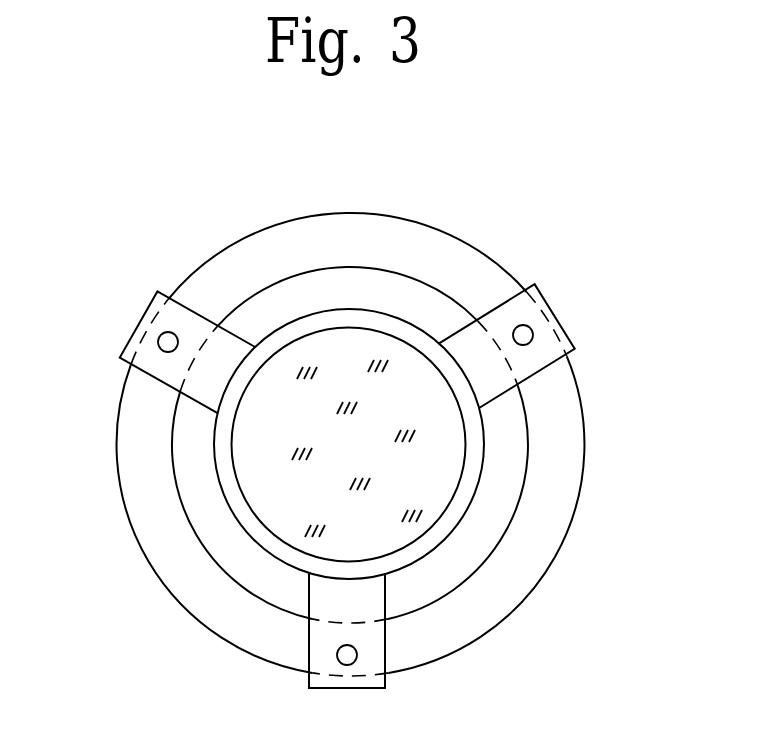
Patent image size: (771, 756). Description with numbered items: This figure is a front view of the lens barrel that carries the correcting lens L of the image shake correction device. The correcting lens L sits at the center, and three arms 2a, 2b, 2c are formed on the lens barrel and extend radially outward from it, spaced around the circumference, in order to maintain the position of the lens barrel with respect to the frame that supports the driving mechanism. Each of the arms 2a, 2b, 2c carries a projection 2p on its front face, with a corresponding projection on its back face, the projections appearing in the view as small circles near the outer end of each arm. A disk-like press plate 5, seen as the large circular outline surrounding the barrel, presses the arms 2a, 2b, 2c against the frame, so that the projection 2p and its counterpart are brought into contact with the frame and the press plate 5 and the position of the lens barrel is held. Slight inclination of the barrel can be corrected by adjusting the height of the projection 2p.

The press plate 5 is at (540, 523).
The correcting lens L is at (265, 483).
The arm 2a is at (367, 665).
The arm 2b is at (542, 360).
The arm 2c is at (132, 370).
The projection 2p is at (166, 332).